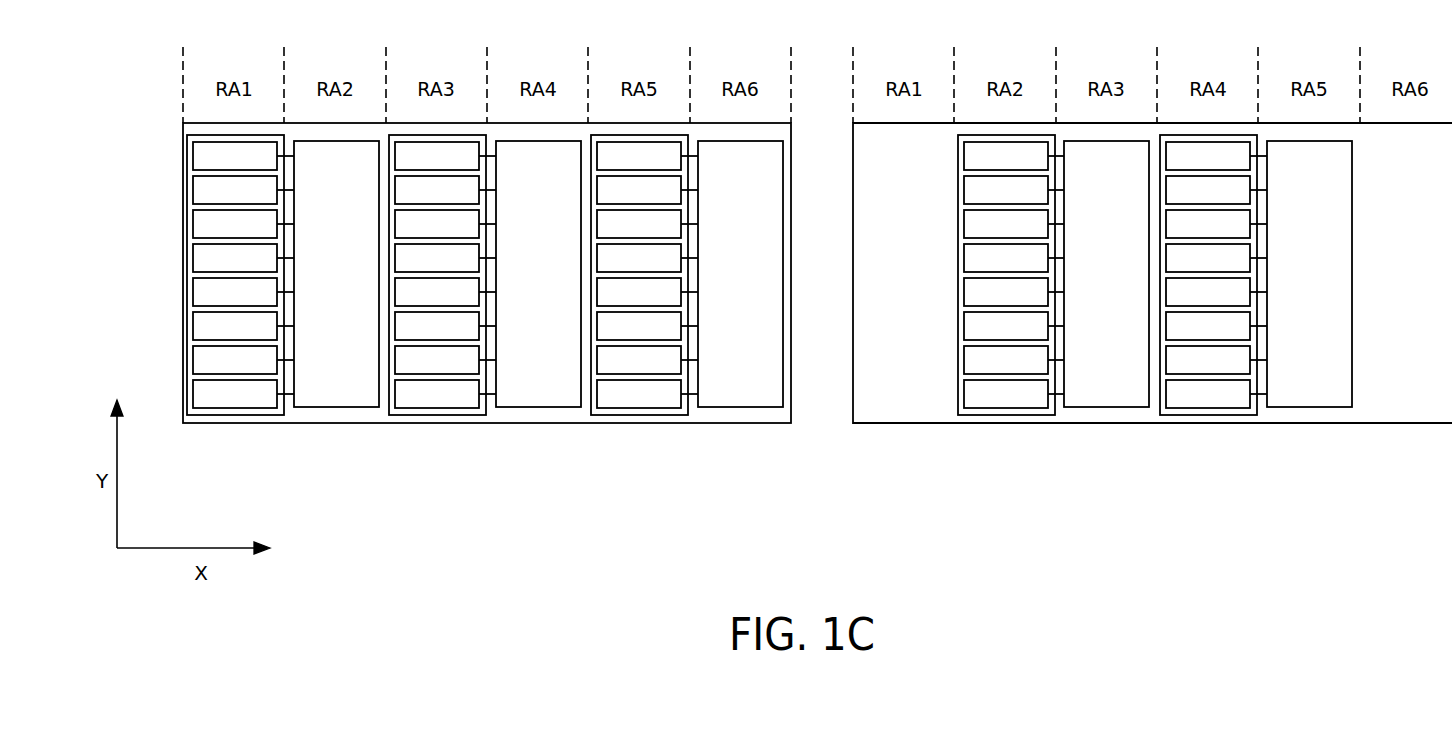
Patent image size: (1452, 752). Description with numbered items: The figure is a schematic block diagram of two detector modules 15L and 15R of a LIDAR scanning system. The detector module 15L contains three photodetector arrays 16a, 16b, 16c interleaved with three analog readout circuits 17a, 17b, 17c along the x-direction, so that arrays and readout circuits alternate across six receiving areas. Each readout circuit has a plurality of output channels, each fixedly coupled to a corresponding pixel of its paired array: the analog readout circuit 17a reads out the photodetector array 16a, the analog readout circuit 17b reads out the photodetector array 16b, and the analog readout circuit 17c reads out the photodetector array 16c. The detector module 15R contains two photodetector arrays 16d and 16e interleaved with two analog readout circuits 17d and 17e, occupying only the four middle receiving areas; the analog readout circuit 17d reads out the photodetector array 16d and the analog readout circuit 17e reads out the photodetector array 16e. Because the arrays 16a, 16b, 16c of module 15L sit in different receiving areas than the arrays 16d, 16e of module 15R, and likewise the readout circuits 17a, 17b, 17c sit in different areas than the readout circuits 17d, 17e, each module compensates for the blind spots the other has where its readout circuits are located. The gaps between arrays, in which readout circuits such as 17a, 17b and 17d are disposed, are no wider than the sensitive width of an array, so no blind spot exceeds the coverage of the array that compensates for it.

The detector module 15L is at (183, 273).
The detector module 15R is at (908, 423).
The photodetector array 16a is at (235, 408).
The photodetector array 16b is at (437, 408).
The photodetector array 16c is at (639, 408).
The photodetector array 16d is at (1006, 408).
The photodetector array 16e is at (1208, 408).
The analog readout circuit 17a is at (336, 407).
The analog readout circuit 17b is at (538, 407).
The analog readout circuit 17c is at (740, 407).
The analog readout circuit 17d is at (1106, 407).
The analog readout circuit 17e is at (1309, 407).